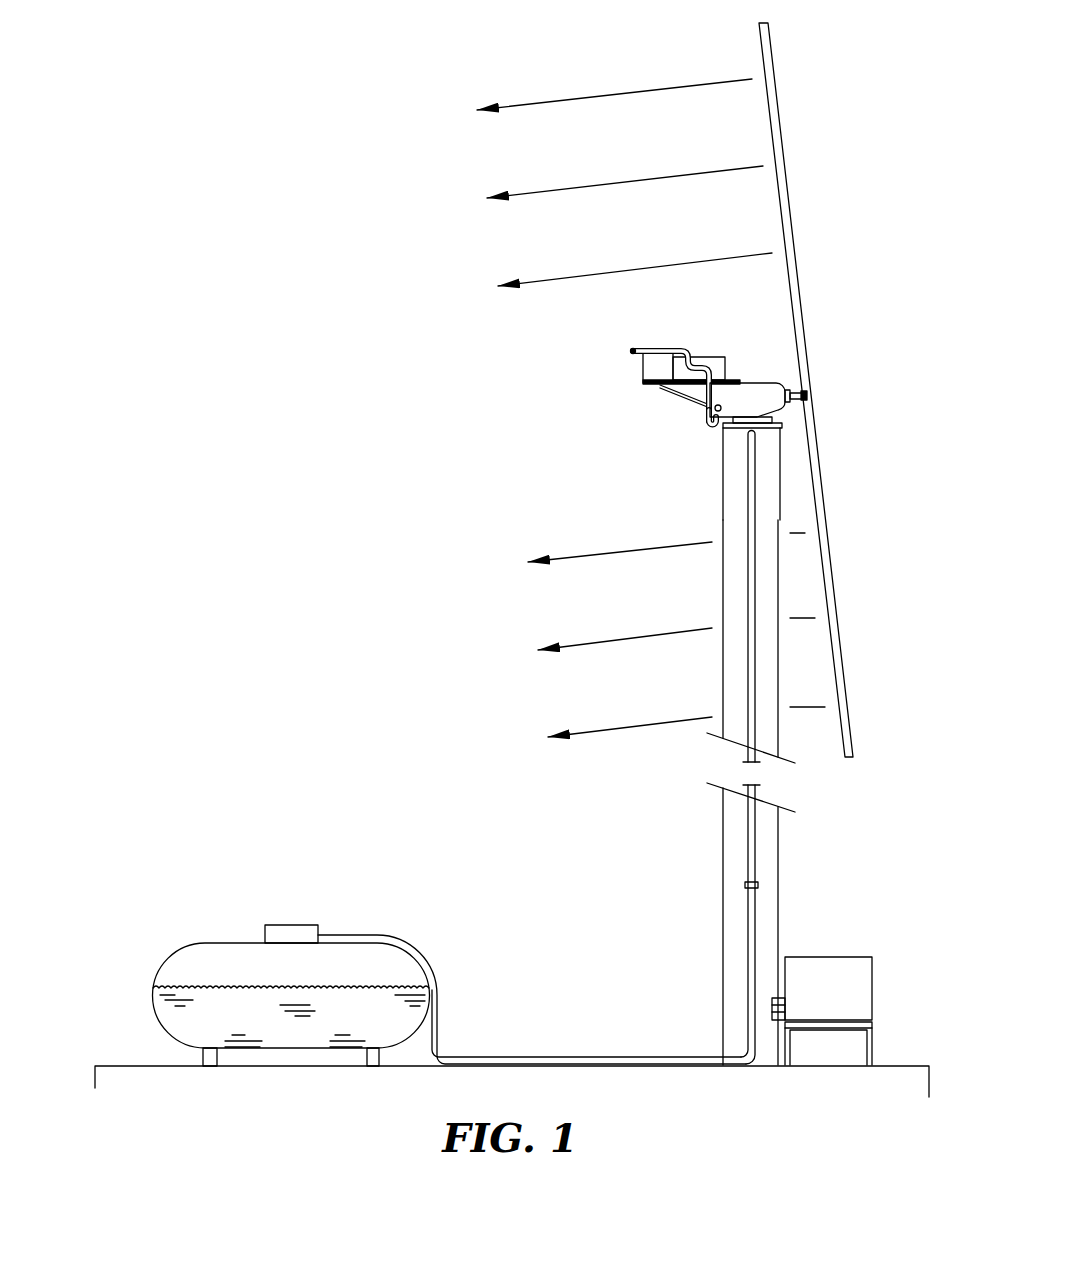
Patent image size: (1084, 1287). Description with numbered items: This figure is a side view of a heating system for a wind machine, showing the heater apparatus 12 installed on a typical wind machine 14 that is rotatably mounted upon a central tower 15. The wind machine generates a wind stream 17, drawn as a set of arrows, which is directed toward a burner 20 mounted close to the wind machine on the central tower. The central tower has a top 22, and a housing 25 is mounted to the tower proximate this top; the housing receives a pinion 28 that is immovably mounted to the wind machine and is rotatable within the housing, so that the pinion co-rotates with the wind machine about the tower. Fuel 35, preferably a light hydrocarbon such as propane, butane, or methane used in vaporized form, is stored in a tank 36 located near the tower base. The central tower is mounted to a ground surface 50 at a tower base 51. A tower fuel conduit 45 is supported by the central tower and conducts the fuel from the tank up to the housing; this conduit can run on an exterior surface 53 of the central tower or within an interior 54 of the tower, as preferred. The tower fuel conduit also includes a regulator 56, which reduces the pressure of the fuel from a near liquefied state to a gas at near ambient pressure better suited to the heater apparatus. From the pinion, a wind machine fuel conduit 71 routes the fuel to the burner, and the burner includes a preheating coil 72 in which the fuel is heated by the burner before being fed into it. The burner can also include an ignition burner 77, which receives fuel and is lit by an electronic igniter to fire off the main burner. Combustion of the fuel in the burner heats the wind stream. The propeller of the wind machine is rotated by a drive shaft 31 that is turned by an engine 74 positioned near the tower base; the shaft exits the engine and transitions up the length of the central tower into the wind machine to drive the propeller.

The heater apparatus 12 is at (612, 352).
The wind machine 14 is at (765, 364).
The central tower 15 is at (738, 653).
The wind stream 17 is at (555, 193).
The burner 20 is at (691, 360).
The top 22 is at (735, 440).
The housing 25 is at (785, 418).
The pinion 28 is at (790, 412).
The drive shaft 31 is at (773, 1015).
The fuel 35 is at (170, 1015).
The tank 36 is at (223, 957).
The tower fuel conduit 45 is at (752, 830).
The ground surface 50 is at (890, 1062).
The tower base 51 is at (733, 1047).
The exterior surface 53 is at (738, 905).
The interior 54 is at (765, 797).
The regulator 56 is at (760, 885).
The wind machine fuel conduit 71 is at (708, 421).
The preheating coil 72 is at (655, 368).
The engine 74 is at (822, 975).
The ignition burner 77 is at (633, 349).